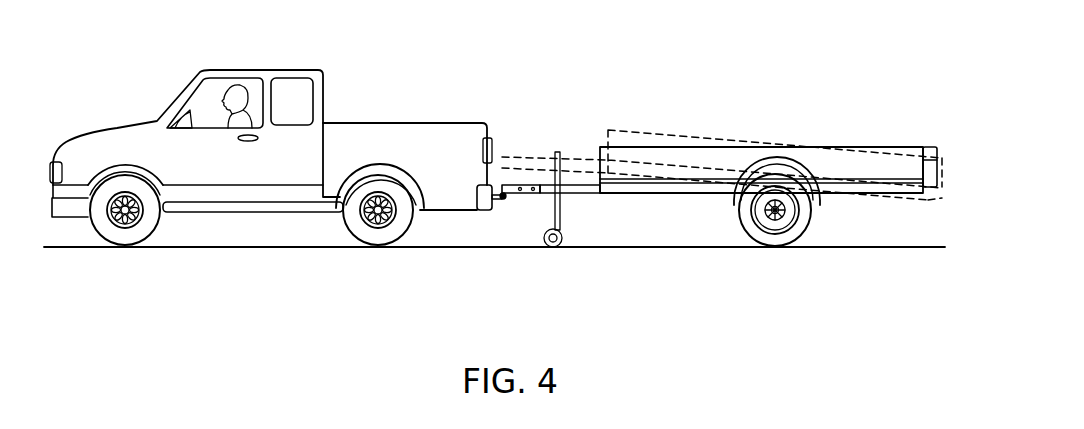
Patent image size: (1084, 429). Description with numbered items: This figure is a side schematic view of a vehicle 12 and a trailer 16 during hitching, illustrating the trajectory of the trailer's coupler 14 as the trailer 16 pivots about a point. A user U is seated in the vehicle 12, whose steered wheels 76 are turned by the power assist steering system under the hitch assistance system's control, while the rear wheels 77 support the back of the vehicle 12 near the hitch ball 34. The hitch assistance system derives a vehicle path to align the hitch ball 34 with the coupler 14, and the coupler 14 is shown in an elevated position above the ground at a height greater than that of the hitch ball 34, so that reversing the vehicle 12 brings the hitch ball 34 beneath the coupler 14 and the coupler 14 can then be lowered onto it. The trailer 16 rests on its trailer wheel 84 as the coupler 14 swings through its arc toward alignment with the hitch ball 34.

The vehicle 12 is at (349, 50).
The user U is at (232, 86).
The coupler 14 is at (504, 186).
The trailer 16 is at (757, 107).
The hitch ball 34 is at (500, 200).
The steered wheels 76 is at (121, 235).
The rear wheel 77 is at (376, 237).
The undercut 84 is at (779, 218).